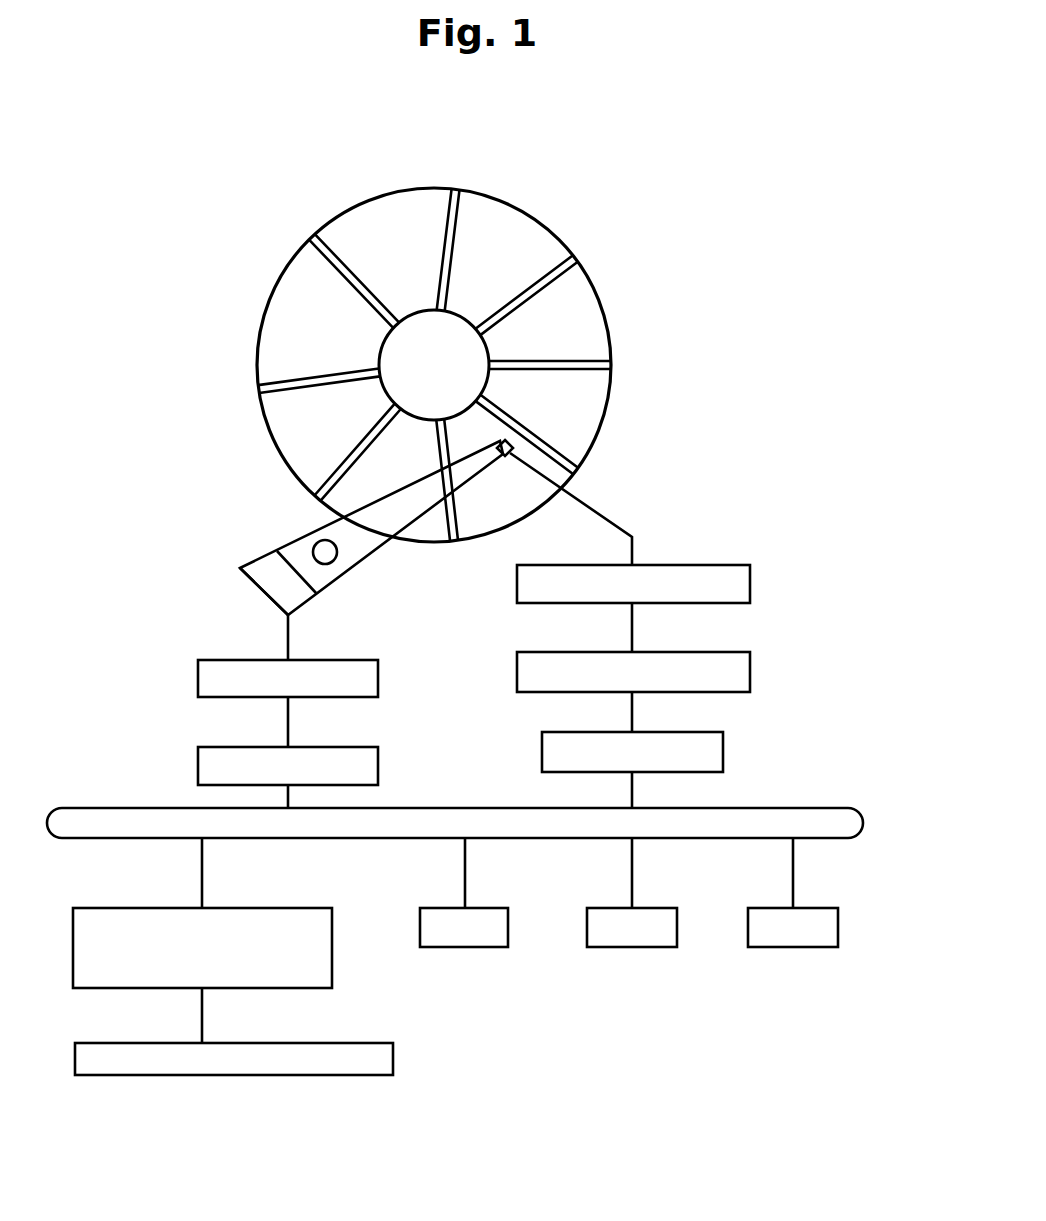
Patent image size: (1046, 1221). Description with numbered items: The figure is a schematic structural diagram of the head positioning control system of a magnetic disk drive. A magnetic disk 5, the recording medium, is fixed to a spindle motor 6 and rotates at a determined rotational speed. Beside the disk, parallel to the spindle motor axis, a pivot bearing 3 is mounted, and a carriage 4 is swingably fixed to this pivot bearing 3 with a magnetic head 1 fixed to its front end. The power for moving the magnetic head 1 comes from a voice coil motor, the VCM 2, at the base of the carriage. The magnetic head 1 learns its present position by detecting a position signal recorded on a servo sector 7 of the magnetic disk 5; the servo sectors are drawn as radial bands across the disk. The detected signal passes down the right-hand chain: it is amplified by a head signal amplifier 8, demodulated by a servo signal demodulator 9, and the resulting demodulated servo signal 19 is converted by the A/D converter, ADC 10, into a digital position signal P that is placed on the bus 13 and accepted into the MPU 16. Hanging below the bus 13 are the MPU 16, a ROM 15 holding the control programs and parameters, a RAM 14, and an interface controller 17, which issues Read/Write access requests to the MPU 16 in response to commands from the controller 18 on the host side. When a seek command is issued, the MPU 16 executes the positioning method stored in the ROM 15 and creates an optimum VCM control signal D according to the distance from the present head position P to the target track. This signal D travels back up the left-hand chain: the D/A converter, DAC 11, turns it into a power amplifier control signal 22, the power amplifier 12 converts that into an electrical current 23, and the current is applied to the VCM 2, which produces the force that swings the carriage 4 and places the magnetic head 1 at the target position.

The magnetic head 1 is at (515, 443).
The voice coil motor (VCM) 2 is at (250, 585).
The pivot bearing 3 is at (313, 537).
The carriage 4 is at (370, 543).
The magnetic disk 5 is at (604, 297).
The spindle motor 6 is at (377, 343).
The servo sector 7 is at (527, 288).
The head signal amplifier 8 is at (752, 582).
The servo signal demodulator 9 is at (752, 668).
The A/D converter (ADC) 10 is at (725, 750).
The D/A converter (DAC) 11 is at (379, 767).
The power amplifier 12 is at (380, 673).
The bus 13 is at (865, 822).
The RAM 14 is at (822, 907).
The ROM 15 is at (653, 907).
The MPU 16 is at (485, 907).
The interface controller 17 is at (275, 907).
The controller on the host side 18 is at (395, 1055).
The demodulated servo signal 19 is at (633, 713).
The power amplifier control signal 22 is at (290, 724).
The electrical current 23 is at (290, 637).
The VCM control signal D is at (288, 802).
The position signal P is at (633, 792).